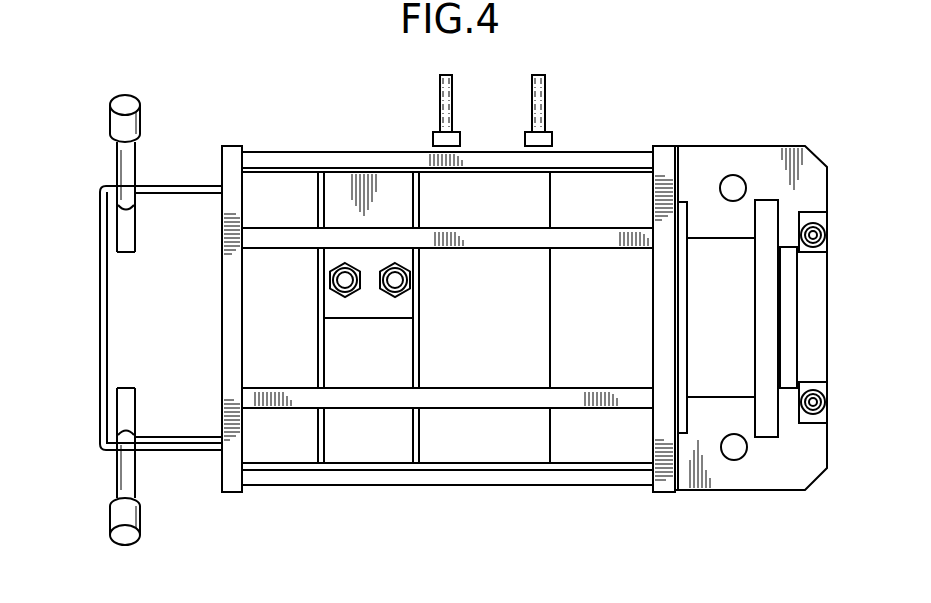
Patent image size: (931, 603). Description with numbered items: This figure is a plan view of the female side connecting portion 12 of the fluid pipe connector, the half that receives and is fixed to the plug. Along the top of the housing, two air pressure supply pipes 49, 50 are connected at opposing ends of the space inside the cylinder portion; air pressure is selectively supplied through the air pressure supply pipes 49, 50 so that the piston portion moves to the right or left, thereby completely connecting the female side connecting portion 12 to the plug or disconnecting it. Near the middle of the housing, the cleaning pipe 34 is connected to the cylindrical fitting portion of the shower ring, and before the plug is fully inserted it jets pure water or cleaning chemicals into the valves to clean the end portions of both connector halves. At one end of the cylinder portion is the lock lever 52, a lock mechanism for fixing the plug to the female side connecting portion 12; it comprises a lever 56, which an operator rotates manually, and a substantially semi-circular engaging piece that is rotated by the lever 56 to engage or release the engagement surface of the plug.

The female side connecting portion 12 is at (657, 110).
The cleaning pipe 34 is at (346, 263).
The air pressure supply pipe 49 is at (553, 132).
The air pressure supply pipe 50 is at (432, 142).
The lock lever 52 is at (143, 93).
The lever 56 is at (117, 155).